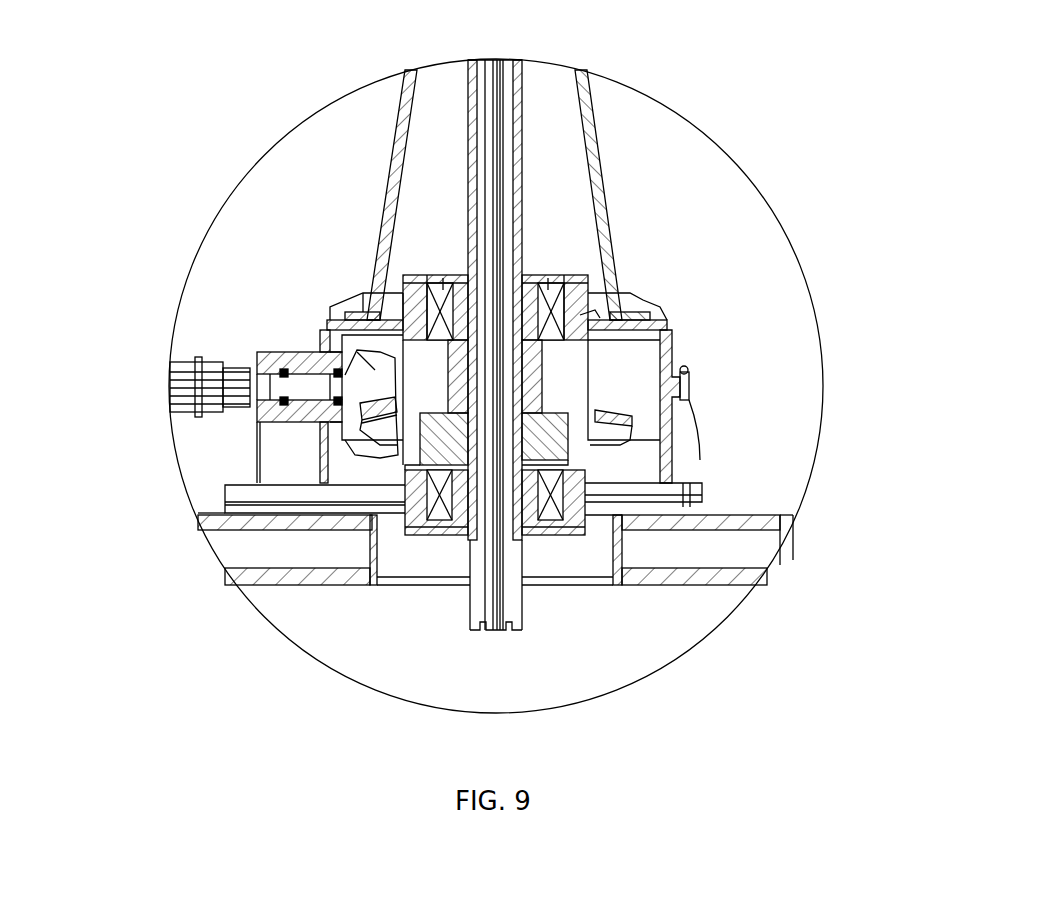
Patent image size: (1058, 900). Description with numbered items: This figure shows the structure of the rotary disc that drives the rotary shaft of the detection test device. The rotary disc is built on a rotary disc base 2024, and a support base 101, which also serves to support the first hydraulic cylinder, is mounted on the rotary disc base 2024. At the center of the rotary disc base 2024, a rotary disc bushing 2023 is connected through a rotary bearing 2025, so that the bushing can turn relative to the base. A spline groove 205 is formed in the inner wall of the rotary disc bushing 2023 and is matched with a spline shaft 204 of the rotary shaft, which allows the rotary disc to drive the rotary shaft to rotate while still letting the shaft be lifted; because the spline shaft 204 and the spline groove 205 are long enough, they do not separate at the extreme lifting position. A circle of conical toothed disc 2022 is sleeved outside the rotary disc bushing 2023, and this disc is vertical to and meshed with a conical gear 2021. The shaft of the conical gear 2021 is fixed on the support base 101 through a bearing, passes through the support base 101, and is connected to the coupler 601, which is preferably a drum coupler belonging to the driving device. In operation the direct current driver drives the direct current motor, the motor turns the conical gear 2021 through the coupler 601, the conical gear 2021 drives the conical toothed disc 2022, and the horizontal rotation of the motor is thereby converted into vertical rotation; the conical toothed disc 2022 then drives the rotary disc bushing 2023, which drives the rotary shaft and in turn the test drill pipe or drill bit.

The spline shaft 204 is at (493, 195).
The spline groove 205 is at (528, 272).
The support base 101 is at (665, 320).
The conical gear 2021 is at (312, 335).
The conical toothed disc 2022 is at (385, 434).
The rotary disc bushing 2023 is at (540, 375).
The rotary disc base 2024 is at (337, 498).
The rotary bearing 2025 is at (583, 530).
The coupler 601 is at (172, 380).